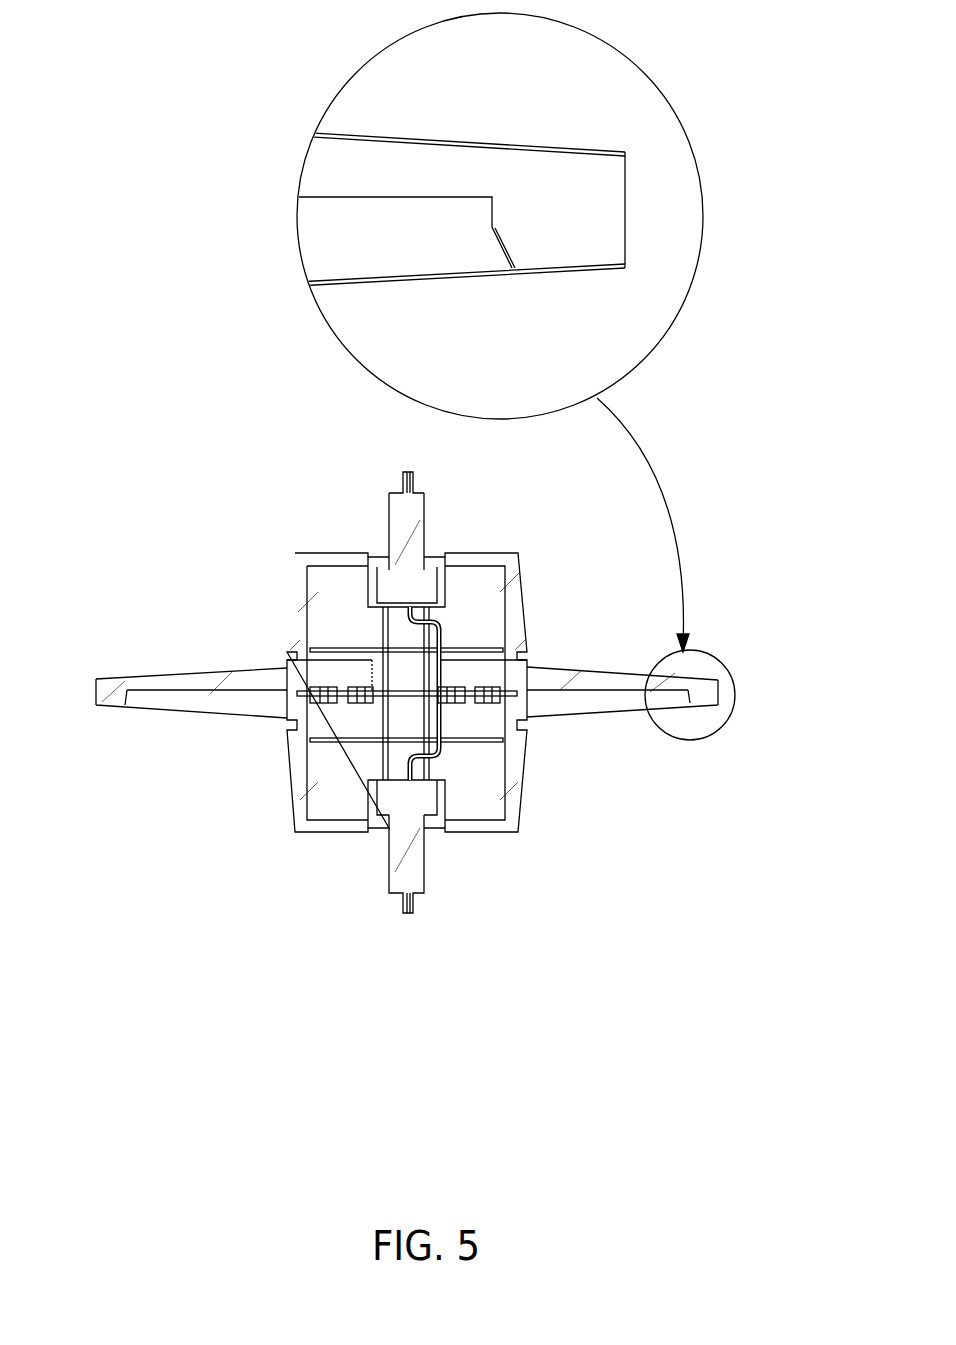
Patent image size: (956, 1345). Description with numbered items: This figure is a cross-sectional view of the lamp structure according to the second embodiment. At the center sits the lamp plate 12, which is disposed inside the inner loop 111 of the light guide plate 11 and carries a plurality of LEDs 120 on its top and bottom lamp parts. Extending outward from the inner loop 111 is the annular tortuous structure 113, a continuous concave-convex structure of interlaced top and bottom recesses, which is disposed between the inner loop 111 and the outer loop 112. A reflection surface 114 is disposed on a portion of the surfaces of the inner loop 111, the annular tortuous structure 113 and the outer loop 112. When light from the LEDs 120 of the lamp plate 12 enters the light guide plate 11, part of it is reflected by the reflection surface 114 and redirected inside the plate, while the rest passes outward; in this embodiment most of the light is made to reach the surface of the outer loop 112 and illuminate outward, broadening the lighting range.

The light guide plate 11 is at (233, 560).
The inner loop 111 is at (291, 672).
The outer loop 112 is at (105, 692).
The annular tortuous structure 113 is at (200, 697).
The reflection surface 114 is at (489, 145).
The lamp plate 12 is at (376, 707).
The LEDs 120 is at (365, 700).